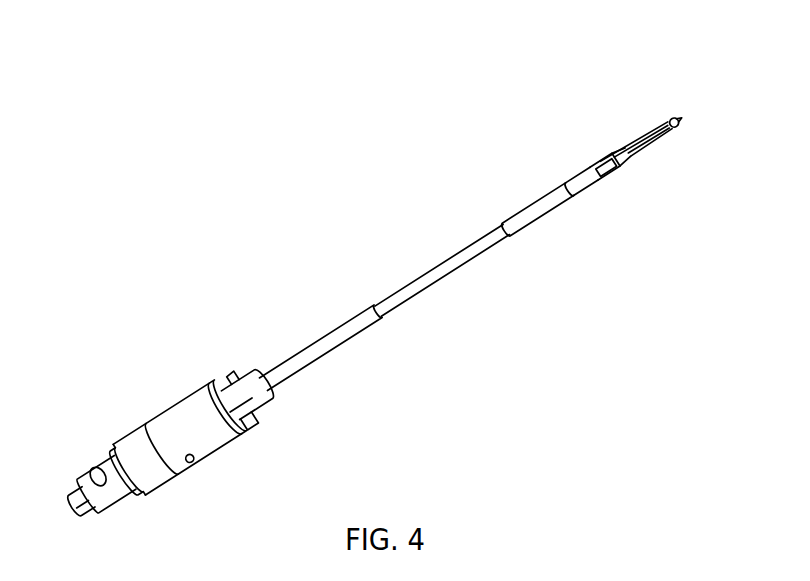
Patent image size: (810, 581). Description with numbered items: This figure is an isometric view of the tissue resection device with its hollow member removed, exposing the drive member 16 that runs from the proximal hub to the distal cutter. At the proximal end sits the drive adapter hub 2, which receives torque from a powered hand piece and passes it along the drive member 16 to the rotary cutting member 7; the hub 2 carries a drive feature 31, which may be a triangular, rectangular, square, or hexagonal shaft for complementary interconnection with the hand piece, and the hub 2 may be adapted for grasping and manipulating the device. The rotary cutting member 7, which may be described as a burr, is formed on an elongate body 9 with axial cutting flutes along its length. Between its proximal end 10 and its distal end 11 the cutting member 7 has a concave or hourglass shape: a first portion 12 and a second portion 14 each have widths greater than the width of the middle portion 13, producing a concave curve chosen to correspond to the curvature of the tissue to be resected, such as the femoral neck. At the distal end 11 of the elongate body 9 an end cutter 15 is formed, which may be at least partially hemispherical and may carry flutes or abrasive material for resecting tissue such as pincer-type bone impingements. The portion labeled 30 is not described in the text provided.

The drive adapter hub 2 is at (151, 414).
The rotary cutting member 7 is at (643, 154).
The elongate body 9 is at (658, 183).
The proximal end 10 is at (629, 179).
The distal end 11 is at (687, 133).
The first portion 12 is at (614, 143).
The middle portion 13 is at (642, 133).
The second portion 14 is at (660, 115).
The end cutter 15 is at (700, 102).
The drive member 16 is at (411, 259).
The handle body 30 is at (178, 496).
The drive feature 31 is at (69, 480).